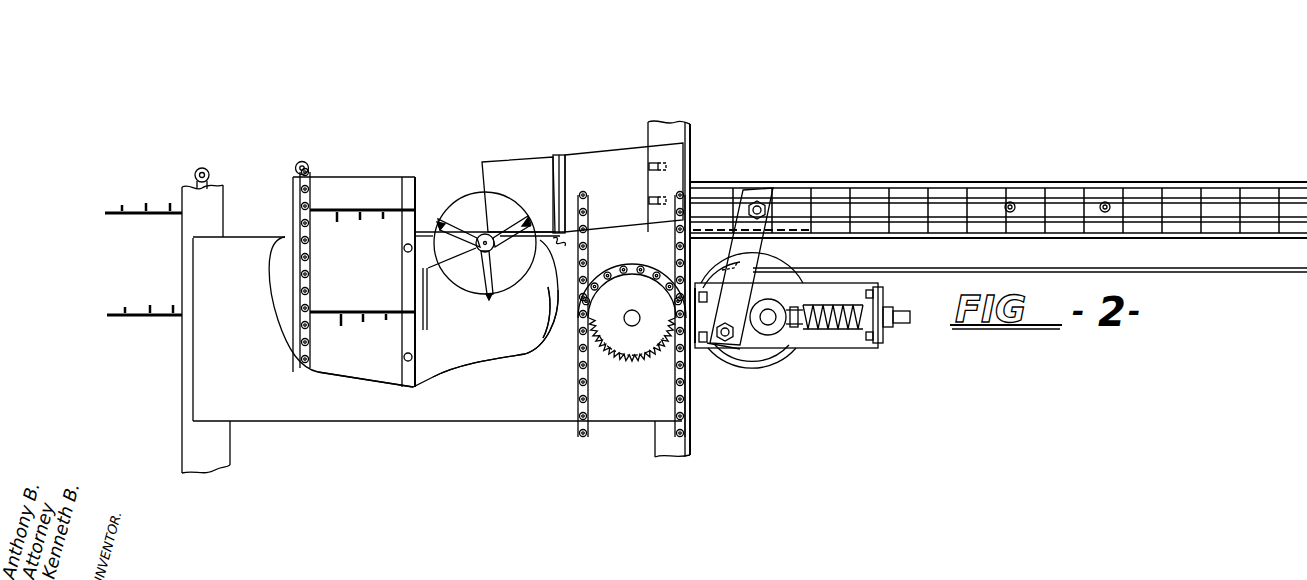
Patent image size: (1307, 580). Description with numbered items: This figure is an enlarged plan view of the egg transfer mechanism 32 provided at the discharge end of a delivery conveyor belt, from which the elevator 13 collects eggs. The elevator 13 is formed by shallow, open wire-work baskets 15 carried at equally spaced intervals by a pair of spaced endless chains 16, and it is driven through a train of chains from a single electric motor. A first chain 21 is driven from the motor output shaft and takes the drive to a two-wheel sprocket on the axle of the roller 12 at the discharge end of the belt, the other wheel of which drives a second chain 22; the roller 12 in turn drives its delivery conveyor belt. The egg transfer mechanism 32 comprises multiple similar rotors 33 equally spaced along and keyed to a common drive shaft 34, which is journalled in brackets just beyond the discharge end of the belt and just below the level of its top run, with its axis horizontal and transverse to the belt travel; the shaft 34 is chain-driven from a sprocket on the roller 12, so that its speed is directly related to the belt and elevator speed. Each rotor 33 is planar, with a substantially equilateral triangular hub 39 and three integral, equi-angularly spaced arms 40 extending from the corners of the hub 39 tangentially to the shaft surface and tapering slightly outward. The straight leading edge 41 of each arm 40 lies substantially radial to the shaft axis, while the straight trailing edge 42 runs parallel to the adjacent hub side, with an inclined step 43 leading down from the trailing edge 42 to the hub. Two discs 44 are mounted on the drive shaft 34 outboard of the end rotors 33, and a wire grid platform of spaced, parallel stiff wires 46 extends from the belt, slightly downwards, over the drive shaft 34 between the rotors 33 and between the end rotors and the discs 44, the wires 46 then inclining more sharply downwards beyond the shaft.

The roller 12 is at (716, 376).
The elevator 13 is at (275, 200).
The wire-work baskets 15 is at (133, 210).
The endless chains 16 is at (295, 163).
The first chain 21 is at (700, 445).
The second chain 22 is at (620, 167).
The egg transfer mechanism 32 is at (473, 217).
The rotor 33 is at (467, 439).
The drive shaft 34 is at (507, 414).
The hub 39 is at (400, 435).
The arms 40 is at (495, 197).
The leading edge 41 is at (438, 222).
The trailing edge 42 is at (556, 160).
The inclined step 43 is at (455, 335).
The discs 44 is at (528, 412).
The wires 46 is at (582, 470).